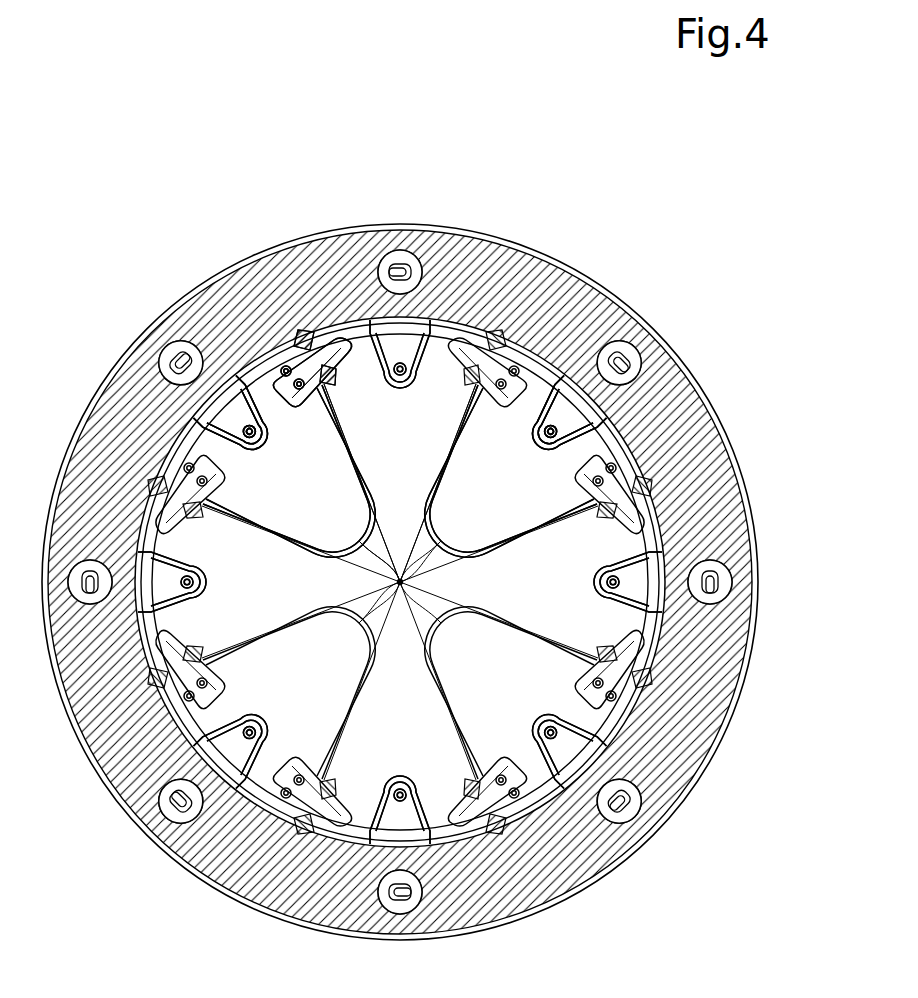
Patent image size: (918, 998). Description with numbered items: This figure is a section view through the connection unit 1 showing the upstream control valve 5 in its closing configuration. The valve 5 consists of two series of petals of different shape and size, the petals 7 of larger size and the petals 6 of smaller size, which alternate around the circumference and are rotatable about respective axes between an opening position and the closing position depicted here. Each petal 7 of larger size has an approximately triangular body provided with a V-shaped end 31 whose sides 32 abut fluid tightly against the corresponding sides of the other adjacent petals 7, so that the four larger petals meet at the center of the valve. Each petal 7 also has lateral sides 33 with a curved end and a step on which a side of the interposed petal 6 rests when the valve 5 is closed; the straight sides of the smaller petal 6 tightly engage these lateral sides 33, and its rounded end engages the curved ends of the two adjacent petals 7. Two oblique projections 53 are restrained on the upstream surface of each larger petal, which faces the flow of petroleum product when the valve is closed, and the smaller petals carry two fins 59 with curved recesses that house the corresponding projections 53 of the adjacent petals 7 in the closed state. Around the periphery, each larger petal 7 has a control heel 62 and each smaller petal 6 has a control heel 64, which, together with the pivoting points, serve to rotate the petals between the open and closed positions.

The tool assembly 1 is at (213, 257).
The upstream control valve 5 is at (507, 253).
The petal of smaller size 6 is at (293, 499).
The petal of larger size 7 is at (393, 466).
The V-shaped end 31 is at (395, 584).
The sides of the V-shaped end 32 is at (388, 548).
The lateral sides 33 is at (345, 445).
The oblique projections 53 is at (312, 382).
The fins 59 is at (305, 365).
The control heel 62 is at (470, 305).
The control heel 64 is at (221, 398).